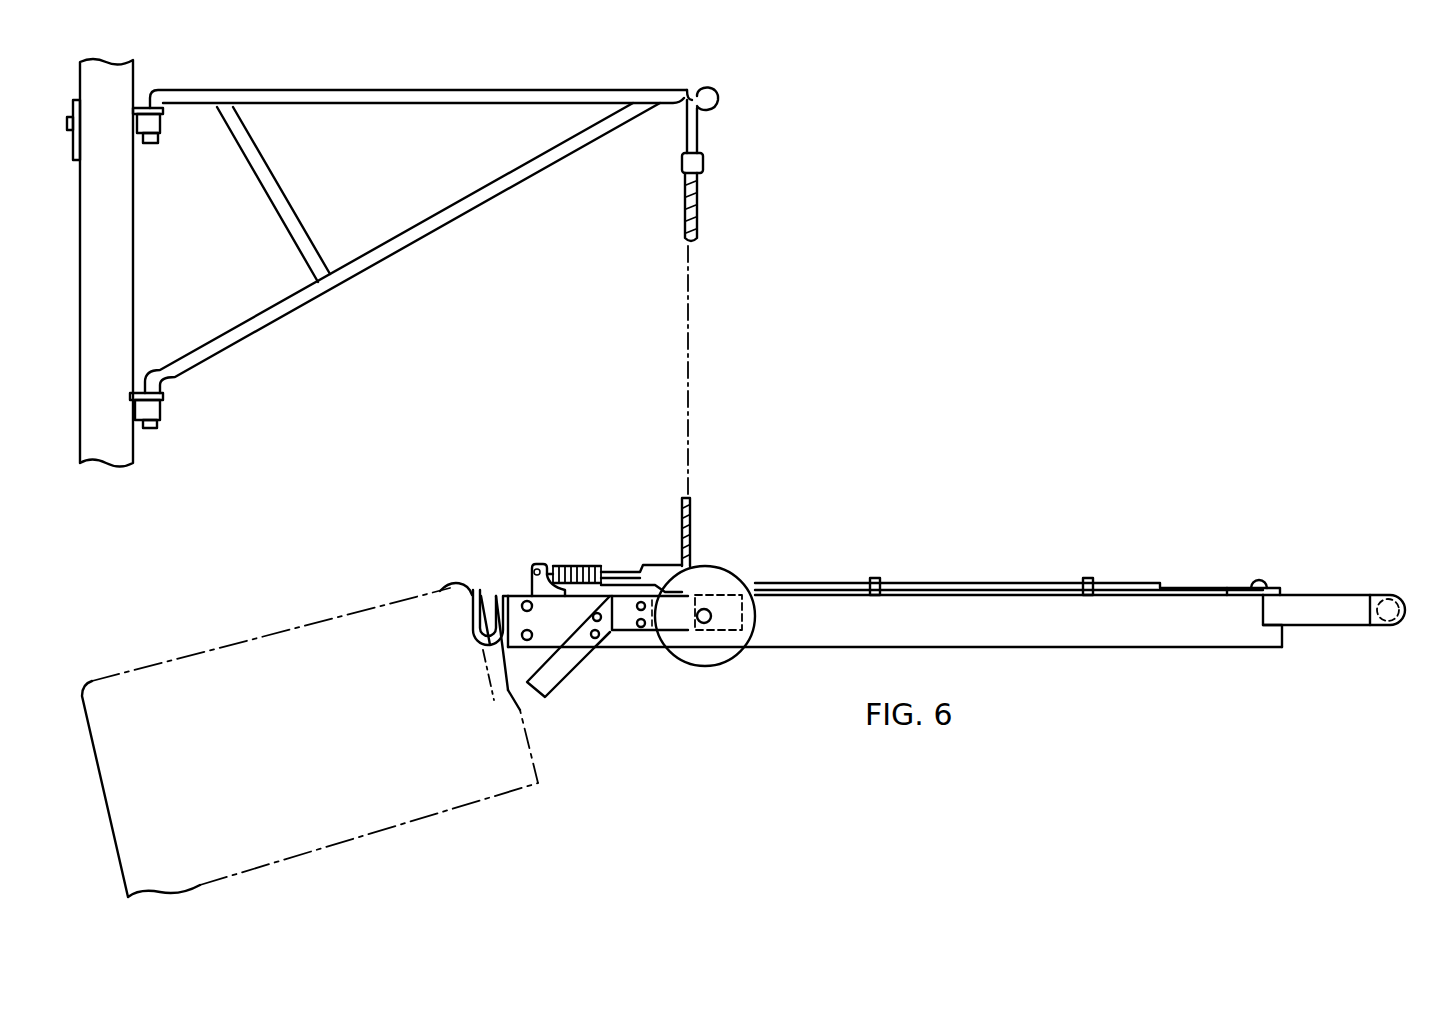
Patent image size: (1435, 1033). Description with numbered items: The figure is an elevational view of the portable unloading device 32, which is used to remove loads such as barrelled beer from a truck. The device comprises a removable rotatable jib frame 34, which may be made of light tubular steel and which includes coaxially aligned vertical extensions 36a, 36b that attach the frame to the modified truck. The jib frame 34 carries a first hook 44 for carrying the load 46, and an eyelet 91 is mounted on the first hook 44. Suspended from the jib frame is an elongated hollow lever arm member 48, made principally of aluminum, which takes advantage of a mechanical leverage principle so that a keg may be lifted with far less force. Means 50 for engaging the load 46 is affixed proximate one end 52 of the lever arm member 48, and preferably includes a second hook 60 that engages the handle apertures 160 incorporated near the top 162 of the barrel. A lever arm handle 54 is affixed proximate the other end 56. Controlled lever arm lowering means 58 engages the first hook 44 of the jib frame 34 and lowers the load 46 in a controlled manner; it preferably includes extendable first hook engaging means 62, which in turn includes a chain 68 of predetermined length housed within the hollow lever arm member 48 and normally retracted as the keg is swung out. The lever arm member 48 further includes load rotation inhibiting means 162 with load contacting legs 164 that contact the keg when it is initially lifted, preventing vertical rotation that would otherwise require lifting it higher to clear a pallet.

The portable unloading device 32 is at (818, 448).
The removable rotatable jib frame 34 is at (381, 252).
The first vertical extension 36a is at (166, 126).
The second vertical extension 36b is at (163, 410).
The first hook 44 is at (717, 100).
The load 46 is at (536, 768).
The elongated hollow lever arm member 48 is at (1160, 650).
The means for engaging the load 50 is at (505, 592).
The one end of the elongated hollow lever arm member 52 is at (636, 648).
The lever arm handle 54 is at (1337, 624).
The other end of the elongated hollow lever arm member 56 is at (1232, 636).
The controlled lever arm lowering means 58 is at (703, 186).
The second hook 60 is at (466, 589).
The extendable first hook engaging means 62 is at (701, 226).
The chain 68 is at (692, 535).
The eyelet 91 is at (699, 140).
The handle apertures 160 is at (490, 705).
The load rotation inhibiting means 162 is at (575, 675).
The load contacting legs 164 is at (553, 684).